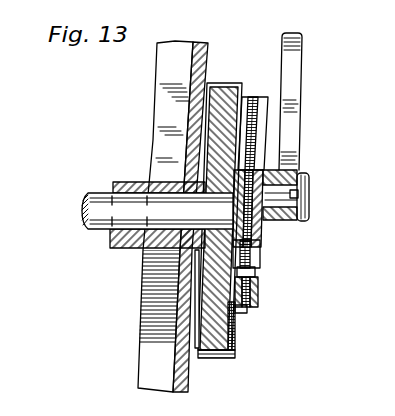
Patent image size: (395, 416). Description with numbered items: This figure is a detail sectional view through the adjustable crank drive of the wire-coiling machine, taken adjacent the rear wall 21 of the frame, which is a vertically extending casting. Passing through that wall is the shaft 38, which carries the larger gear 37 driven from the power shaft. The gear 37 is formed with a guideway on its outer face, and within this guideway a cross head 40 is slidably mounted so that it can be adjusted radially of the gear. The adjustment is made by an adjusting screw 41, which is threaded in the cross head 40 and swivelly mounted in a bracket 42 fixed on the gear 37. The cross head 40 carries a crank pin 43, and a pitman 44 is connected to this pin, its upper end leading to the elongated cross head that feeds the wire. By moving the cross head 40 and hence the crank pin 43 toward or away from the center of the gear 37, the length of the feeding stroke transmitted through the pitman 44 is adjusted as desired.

The rear wall 21 is at (200, 43).
The gear 37 is at (235, 352).
The shaft 38 is at (83, 213).
The cross head 40 is at (262, 232).
The adjusting screw 41 is at (260, 260).
The bracket 42 is at (258, 293).
The crank pin 43 is at (309, 205).
The pitman 44 is at (295, 96).